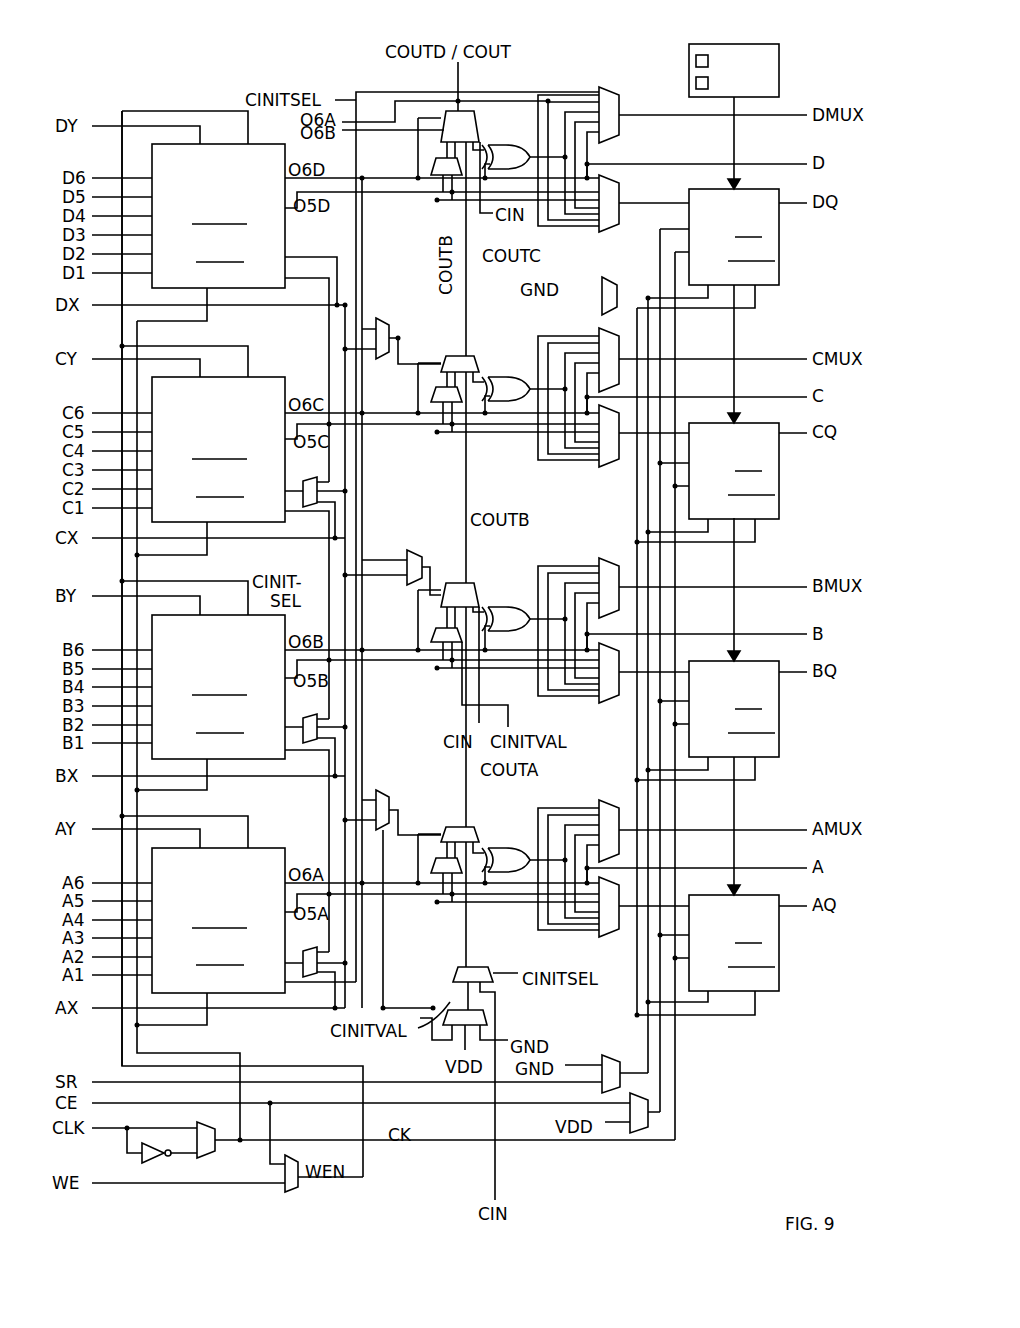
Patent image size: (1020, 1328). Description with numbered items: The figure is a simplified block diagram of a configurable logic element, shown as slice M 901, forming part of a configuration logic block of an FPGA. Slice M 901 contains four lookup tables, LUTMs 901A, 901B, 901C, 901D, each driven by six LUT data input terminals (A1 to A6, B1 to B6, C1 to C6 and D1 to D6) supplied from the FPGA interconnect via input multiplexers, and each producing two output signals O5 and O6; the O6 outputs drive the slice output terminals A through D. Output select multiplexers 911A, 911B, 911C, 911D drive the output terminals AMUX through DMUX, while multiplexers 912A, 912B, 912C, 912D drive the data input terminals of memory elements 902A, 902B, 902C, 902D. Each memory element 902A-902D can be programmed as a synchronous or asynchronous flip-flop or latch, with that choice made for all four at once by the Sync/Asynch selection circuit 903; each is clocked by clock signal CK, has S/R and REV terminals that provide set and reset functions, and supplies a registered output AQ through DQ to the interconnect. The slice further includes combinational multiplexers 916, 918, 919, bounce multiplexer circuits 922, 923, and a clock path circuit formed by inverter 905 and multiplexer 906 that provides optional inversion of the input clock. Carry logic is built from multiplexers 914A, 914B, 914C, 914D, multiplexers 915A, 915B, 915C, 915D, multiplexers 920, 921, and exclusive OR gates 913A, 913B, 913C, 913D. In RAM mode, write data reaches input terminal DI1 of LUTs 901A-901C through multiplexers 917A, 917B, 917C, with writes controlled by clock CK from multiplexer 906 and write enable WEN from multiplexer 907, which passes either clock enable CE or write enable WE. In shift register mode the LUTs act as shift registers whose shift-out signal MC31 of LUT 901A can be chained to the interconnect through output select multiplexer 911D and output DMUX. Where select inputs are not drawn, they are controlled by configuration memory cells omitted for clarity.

The slice M 901 is at (178, 90).
The Sync/Asynch selection circuit 903 is at (689, 86).
The lookup table (LUTM) 901A is at (218, 920).
The lookup table (LUTM) 901B is at (218, 687).
The lookup table (LUTM) 901C is at (218, 449).
The lookup table (LUTM) 901D is at (218, 216).
The memory element 902A is at (734, 943).
The memory element 902B is at (734, 709).
The memory element 902C is at (734, 471).
The memory element 902D is at (734, 237).
The inverter 905 is at (152, 1165).
The multiplexer 906 is at (214, 1152).
The multiplexer 907 is at (292, 1192).
The output select multiplexer 911A is at (601, 811).
The output select multiplexer 911B is at (601, 569).
The output select multiplexer 911C is at (601, 341).
The output select multiplexer 911D is at (619, 136).
The multiplexer 912A is at (605, 937).
The multiplexer 912B is at (605, 703).
The multiplexer 912C is at (605, 467).
The multiplexer 912D is at (619, 190).
The exclusive OR gate 913A is at (508, 843).
The exclusive OR gate 913B is at (508, 602).
The exclusive OR gate 913C is at (508, 372).
The exclusive OR gate 913D is at (508, 137).
The multiplexer 914A is at (450, 827).
The multiplexer 914B is at (450, 583).
The multiplexer 914C is at (450, 356).
The multiplexer 914D is at (473, 111).
The multiplexer 915A is at (460, 874).
The multiplexer 915B is at (460, 643).
The multiplexer 915C is at (460, 403).
The multiplexer 915D is at (437, 176).
The combinational multiplexer 916 is at (385, 318).
The multiplexer 917A is at (310, 977).
The multiplexer 917B is at (310, 743).
The multiplexer 917C is at (310, 507).
The combinational multiplexer 918 is at (391, 567).
The combinational multiplexer 919 is at (389, 828).
The multiplexer 920 is at (487, 1017).
The multiplexer 921 is at (612, 280).
The bounce multiplexer circuit 922 is at (608, 1055).
The bounce multiplexer circuit 923 is at (640, 1133).